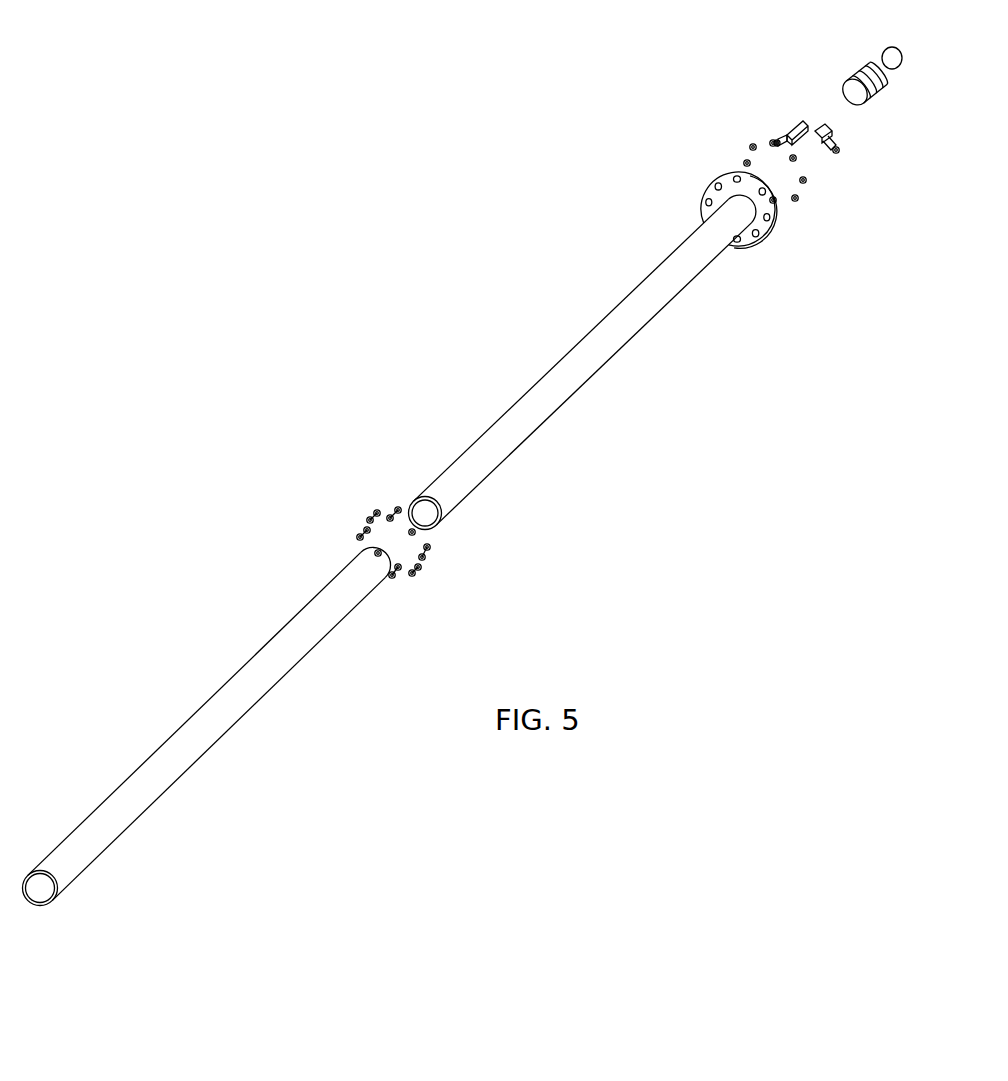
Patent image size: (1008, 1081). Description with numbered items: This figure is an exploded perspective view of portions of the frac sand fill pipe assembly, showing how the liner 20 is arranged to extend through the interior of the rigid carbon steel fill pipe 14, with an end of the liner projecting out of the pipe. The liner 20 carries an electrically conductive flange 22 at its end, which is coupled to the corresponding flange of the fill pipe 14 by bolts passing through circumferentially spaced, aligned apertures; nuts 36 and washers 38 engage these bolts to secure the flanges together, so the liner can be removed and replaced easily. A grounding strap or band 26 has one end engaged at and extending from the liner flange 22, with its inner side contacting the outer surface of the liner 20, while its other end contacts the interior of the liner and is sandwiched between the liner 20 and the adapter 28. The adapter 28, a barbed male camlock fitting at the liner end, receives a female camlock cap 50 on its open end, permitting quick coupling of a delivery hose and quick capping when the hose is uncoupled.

The fill pipe 14 is at (173, 760).
The liner 20 is at (562, 388).
The electrically conductive flange 22 is at (760, 227).
The grounding strap or band 26 is at (833, 155).
The adapter 28 is at (847, 82).
The nuts 36 is at (418, 568).
The washers 38 is at (798, 201).
The cap 50 is at (885, 50).